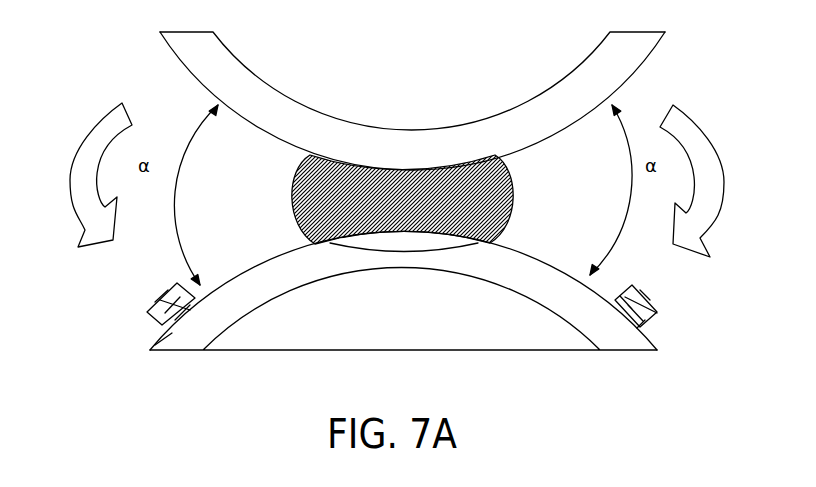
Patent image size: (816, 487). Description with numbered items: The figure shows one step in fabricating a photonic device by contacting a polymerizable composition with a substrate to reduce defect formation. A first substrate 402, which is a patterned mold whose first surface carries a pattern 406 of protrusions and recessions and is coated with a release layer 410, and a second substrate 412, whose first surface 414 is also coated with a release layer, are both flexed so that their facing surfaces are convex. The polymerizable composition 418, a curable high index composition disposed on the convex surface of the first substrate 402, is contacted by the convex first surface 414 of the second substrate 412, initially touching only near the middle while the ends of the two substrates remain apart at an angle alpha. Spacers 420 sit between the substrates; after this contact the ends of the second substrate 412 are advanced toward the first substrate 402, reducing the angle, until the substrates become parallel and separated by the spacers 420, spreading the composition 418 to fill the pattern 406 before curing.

The second substrate 412 is at (161, 34).
The first surface 414 is at (245, 93).
The first substrate 402 is at (152, 345).
The release layer 410 is at (225, 272).
The polymerizable composition 418 is at (402, 199).
The pattern 406 is at (335, 244).
The spacers 420 is at (160, 303).